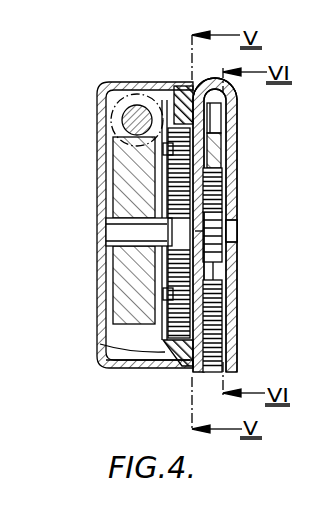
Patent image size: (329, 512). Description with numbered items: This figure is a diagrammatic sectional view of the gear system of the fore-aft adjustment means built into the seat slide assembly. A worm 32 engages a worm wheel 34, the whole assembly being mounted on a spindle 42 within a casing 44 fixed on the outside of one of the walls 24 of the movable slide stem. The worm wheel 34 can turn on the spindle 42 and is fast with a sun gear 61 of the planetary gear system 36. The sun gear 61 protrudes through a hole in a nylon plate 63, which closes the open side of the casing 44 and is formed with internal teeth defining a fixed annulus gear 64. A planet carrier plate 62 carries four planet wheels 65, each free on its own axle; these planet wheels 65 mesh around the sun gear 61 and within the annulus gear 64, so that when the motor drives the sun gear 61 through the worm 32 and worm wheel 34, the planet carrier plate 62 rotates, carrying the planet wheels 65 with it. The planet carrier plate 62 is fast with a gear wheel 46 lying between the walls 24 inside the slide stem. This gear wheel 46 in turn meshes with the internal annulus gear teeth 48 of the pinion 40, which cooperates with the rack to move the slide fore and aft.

The wall 24 is at (232, 302).
The worm 32 is at (132, 103).
The worm wheel 34 is at (120, 185).
The planetary gear system 36 is at (258, 62).
The pinion 40 is at (213, 120).
The spindle 42 is at (226, 231).
The casing 44 is at (122, 368).
The gear wheel 46 is at (210, 210).
The internal annulus gear teeth 48 is at (217, 175).
The sun gear 61 is at (165, 234).
The planet carrier plate 62 is at (215, 150).
The nylon plate 63 is at (100, 344).
The annulus gear 64 is at (177, 88).
The planet wheels 65 is at (178, 148).